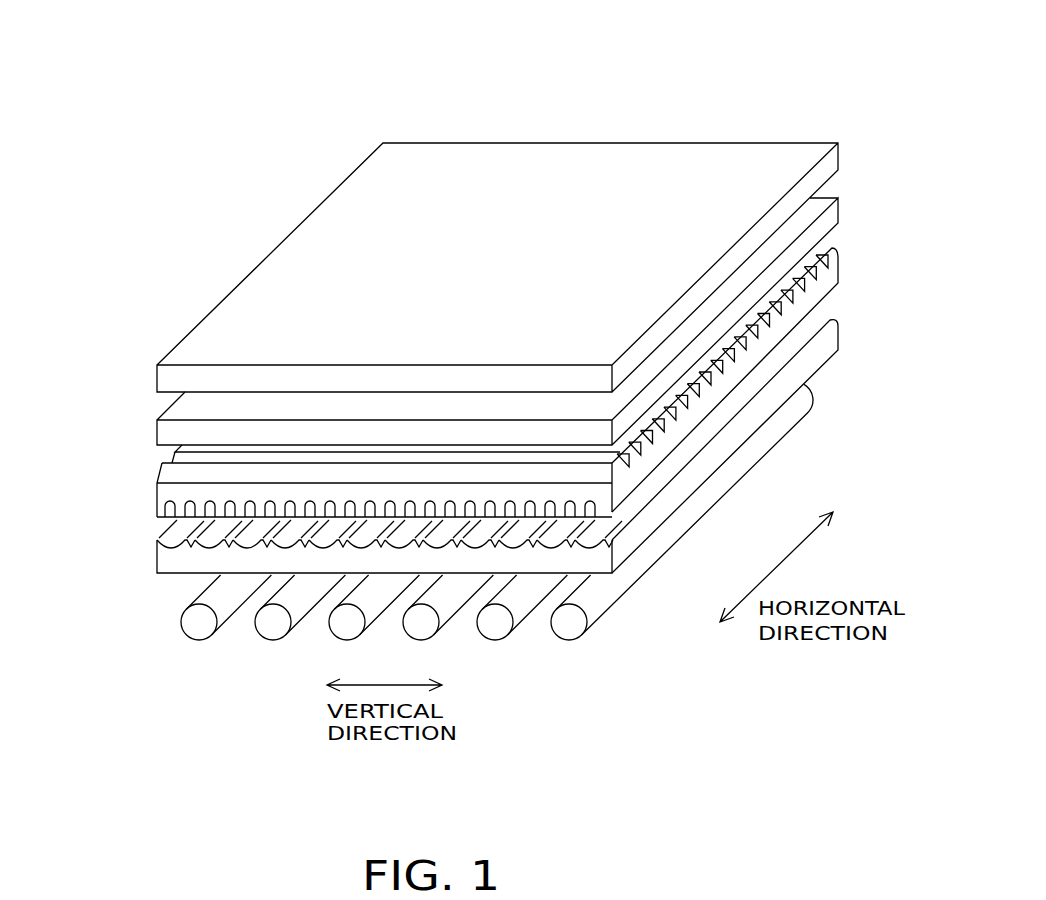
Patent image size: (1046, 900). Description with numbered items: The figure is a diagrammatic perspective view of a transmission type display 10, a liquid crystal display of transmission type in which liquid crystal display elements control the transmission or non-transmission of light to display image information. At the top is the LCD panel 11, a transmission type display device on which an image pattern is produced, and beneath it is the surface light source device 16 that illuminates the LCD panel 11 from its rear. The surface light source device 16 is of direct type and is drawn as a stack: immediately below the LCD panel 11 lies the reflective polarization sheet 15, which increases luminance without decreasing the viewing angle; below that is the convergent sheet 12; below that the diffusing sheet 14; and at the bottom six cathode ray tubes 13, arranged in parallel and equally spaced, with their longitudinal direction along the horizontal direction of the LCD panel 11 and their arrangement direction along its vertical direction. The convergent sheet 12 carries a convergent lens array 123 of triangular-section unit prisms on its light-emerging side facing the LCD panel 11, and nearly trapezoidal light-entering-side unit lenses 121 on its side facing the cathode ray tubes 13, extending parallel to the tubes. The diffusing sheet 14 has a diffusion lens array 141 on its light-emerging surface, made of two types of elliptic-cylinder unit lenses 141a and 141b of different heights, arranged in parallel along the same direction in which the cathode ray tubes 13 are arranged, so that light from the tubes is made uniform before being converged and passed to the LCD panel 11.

The transmission type display 10 is at (590, 106).
The LCD panel 11 is at (157, 376).
The reflective polarization sheet 15 is at (155, 433).
The surface light source device 16 is at (83, 413).
The convergent sheet 12 is at (147, 499).
The diffusing sheet 14 is at (149, 557).
The cathode ray tubes 13 is at (273, 622).
The convergent lens array 123 is at (605, 470).
The light-entering-side unit lenses 121 is at (605, 503).
The diffusion lens array 141 is at (693, 693).
The unit lens 141a is at (539, 551).
The unit lens 141b is at (565, 548).